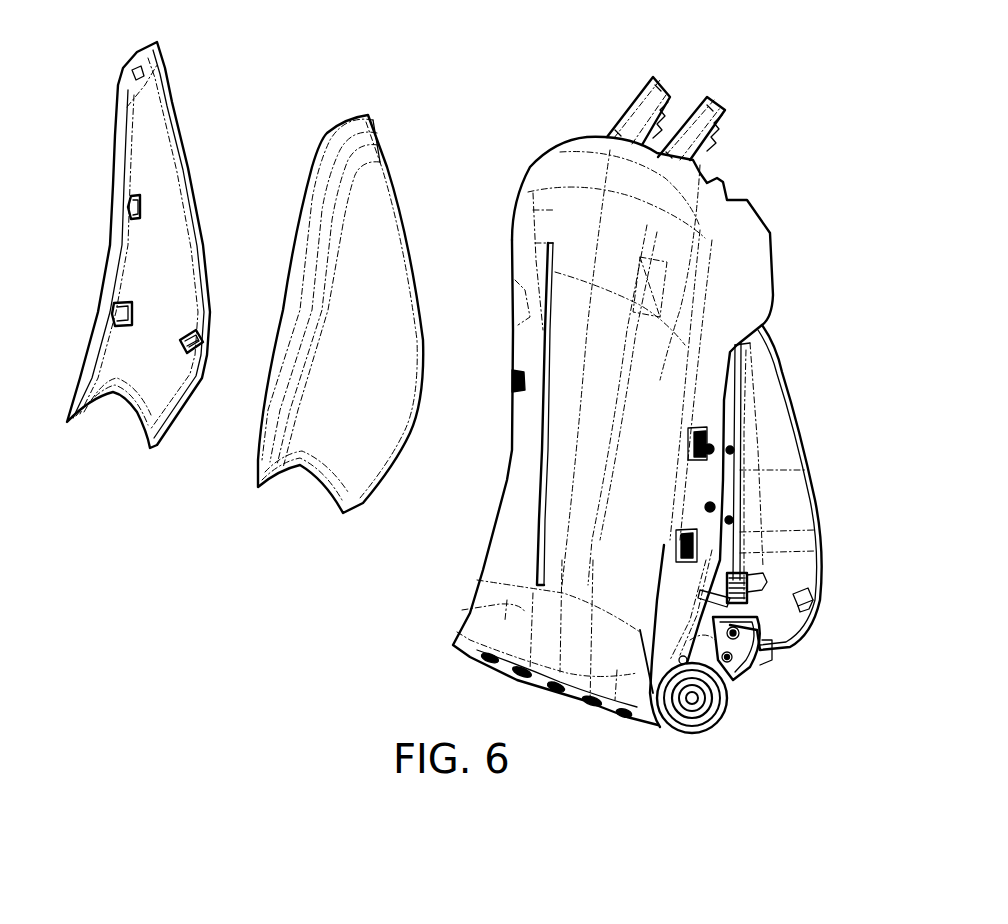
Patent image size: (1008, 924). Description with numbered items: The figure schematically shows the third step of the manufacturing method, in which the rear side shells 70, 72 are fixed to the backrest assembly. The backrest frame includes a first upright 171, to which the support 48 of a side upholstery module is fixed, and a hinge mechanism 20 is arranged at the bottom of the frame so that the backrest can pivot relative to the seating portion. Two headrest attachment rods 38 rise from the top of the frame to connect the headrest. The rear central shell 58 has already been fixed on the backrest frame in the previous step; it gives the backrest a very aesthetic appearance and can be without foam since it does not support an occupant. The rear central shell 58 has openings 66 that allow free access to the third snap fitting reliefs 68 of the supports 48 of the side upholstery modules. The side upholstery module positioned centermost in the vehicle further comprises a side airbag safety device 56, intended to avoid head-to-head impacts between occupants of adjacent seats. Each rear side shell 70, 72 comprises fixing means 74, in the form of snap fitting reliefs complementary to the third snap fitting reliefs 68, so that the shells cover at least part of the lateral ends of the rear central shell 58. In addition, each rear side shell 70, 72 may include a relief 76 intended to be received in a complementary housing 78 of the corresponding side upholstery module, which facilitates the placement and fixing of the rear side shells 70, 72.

The rear side shell 72 is at (153, 113).
The fixing means 74 is at (118, 305).
The relief 76 is at (193, 362).
The rear side shell 70 is at (358, 453).
The rear central shell 58 is at (527, 252).
The headrest attachment rod 38 is at (688, 115).
The openings 66 is at (676, 541).
The support 48 is at (737, 370).
The side airbag safety device 56 is at (763, 398).
The third snap fitting reliefs 68 is at (712, 440).
The complementary housing 78 is at (823, 606).
The first upright 171 is at (730, 670).
The hinge mechanism 20 is at (700, 733).